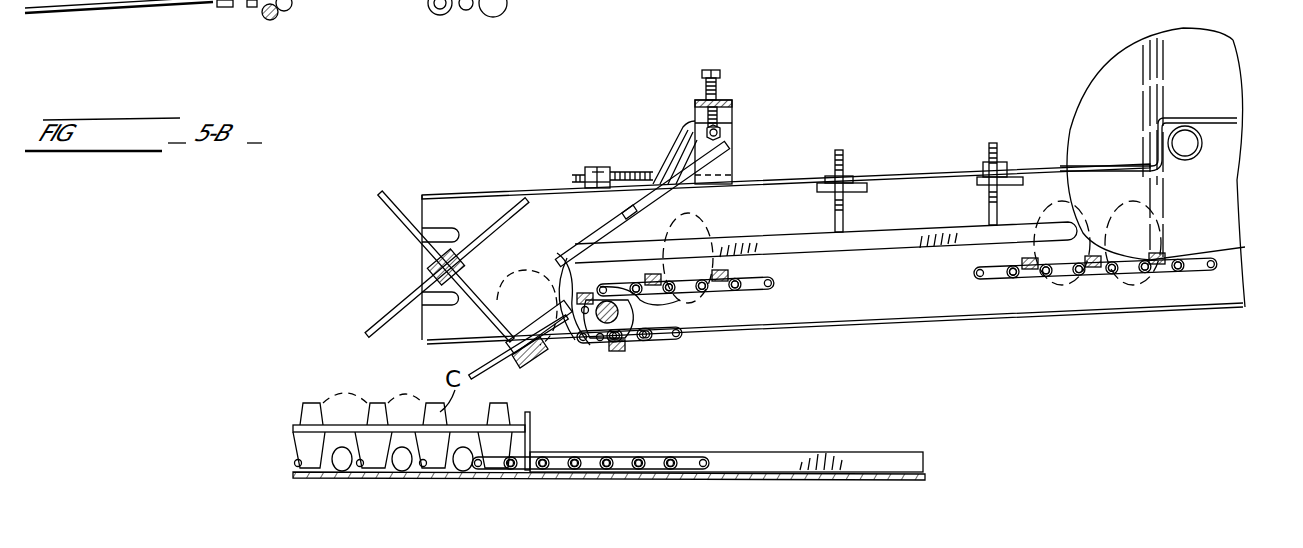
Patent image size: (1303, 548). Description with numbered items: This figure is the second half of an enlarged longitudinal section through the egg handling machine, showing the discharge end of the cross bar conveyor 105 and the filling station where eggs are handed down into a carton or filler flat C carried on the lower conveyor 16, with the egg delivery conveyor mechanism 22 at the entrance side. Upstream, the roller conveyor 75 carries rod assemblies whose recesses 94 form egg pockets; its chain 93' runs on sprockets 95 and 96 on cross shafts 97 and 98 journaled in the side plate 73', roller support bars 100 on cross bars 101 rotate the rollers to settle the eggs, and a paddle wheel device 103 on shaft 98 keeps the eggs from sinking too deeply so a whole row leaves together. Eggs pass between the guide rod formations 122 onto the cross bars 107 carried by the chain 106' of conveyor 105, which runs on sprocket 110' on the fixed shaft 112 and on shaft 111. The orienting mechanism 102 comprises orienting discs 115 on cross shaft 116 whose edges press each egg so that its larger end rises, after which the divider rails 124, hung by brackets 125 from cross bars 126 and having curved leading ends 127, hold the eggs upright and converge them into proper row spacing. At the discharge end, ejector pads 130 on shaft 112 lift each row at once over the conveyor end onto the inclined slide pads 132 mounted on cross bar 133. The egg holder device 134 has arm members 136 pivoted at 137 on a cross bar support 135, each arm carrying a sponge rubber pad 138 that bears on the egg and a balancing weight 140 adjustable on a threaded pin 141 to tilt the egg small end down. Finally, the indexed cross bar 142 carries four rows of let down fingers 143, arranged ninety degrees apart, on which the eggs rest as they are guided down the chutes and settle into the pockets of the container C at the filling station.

The conveyor 16 is at (618, 452).
The accumulator-type egg delivery conveyor mechanism 22 is at (690, 455).
The side plate 73' is at (833, 192).
The roller conveyor 75 is at (768, 5).
The endless support chain 93' is at (465, 24).
The recesses 94 is at (505, 0).
The sprocket 95 is at (873, 4).
The sprocket 96 is at (420, 0).
The cross shaft 97 is at (826, 20).
The cross shaft 98 is at (392, 0).
The roller support bars 100 is at (612, 0).
The cross bars 101 is at (727, 10).
The orienting mechanism 102 is at (1103, 61).
The paddle wheel device 103 is at (433, 3).
The cross bar conveyor 105 is at (1120, 285).
The endless chain 106' is at (249, 34).
The cross bars 107 is at (735, 275).
The end sprocket 110' is at (649, 320).
The cross shaft 111 is at (312, 0).
The cross shaft 112 is at (585, 340).
The orienting disc 115 is at (1160, 45).
The cross shaft 116 is at (1188, 137).
The guide rod formations 122 is at (1078, 168).
The divider rails 124 is at (875, 237).
The brackets 125 is at (838, 212).
The cross bars 126 is at (875, 176).
The curved leading ends 127 is at (565, 275).
The ejector pads 130 is at (630, 287).
The slide pads 132 is at (490, 372).
The cross bar 133 is at (545, 367).
The egg holder device 134 is at (580, 163).
The cross bar support 135 is at (730, 111).
The arm members 136 is at (655, 182).
The pivot 137 is at (722, 133).
The sponge rubber pad 138 is at (598, 247).
The balancing weight 140 is at (598, 172).
The threaded pin 141 is at (572, 178).
The cross bar 142 is at (425, 262).
The let down fingers 143 is at (395, 195).